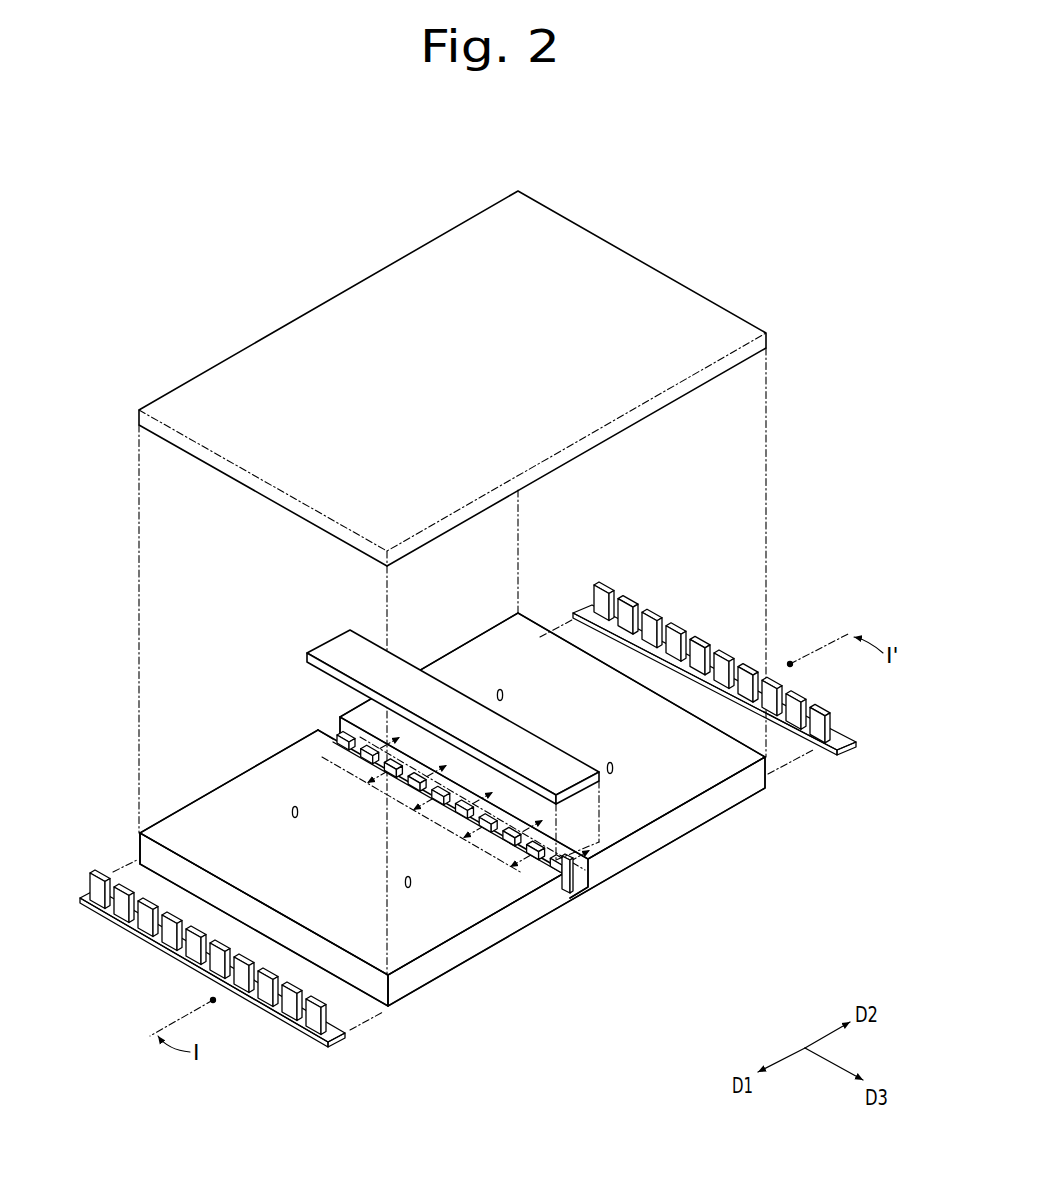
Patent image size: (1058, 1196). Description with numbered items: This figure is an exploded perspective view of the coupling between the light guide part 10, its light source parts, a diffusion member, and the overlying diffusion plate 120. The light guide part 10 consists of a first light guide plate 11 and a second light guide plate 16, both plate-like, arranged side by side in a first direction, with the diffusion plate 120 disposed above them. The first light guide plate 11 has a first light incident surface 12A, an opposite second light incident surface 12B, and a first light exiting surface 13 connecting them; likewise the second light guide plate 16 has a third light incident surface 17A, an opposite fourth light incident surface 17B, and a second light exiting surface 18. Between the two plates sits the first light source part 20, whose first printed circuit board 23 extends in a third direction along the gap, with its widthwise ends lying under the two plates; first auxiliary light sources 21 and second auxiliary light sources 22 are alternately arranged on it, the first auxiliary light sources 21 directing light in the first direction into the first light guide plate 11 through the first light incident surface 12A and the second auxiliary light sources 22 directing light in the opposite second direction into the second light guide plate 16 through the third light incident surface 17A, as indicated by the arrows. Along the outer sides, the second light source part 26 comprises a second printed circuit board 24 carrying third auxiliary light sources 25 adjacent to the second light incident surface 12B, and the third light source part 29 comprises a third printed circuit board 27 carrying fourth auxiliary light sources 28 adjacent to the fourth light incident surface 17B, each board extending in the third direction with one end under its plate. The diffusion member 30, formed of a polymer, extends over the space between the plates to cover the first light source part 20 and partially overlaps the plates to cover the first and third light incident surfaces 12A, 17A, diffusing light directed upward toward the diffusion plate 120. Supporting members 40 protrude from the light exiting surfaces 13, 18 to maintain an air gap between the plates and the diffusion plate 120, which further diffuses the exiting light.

The light guide part 10 is at (440, 844).
The first light guide plate 11 is at (470, 952).
The first light incident surface 12A is at (330, 737).
The second light incident surface 12B is at (137, 855).
The first light exiting surface 13 is at (212, 815).
The second light guide plate 16 is at (632, 856).
The third light incident surface 17A is at (339, 727).
The fourth light incident surface 17B is at (778, 782).
The second light exiting surface 18 is at (490, 652).
The first light source part 20 is at (462, 875).
The first auxiliary light sources 21 is at (536, 861).
The second auxiliary light sources 22 is at (508, 857).
The first printed circuit board 23 is at (567, 882).
The second printed circuit board 24 is at (340, 1047).
The third auxiliary light sources 25 is at (208, 988).
The second light source part 26 is at (220, 1008).
The third printed circuit board 27 is at (843, 744).
The fourth auxiliary light sources 28 is at (843, 714).
The third light source part 29 is at (759, 668).
The diffusion member 30 is at (345, 651).
The supporting members 40 is at (294, 806).
The diffusion plate 120 is at (237, 377).